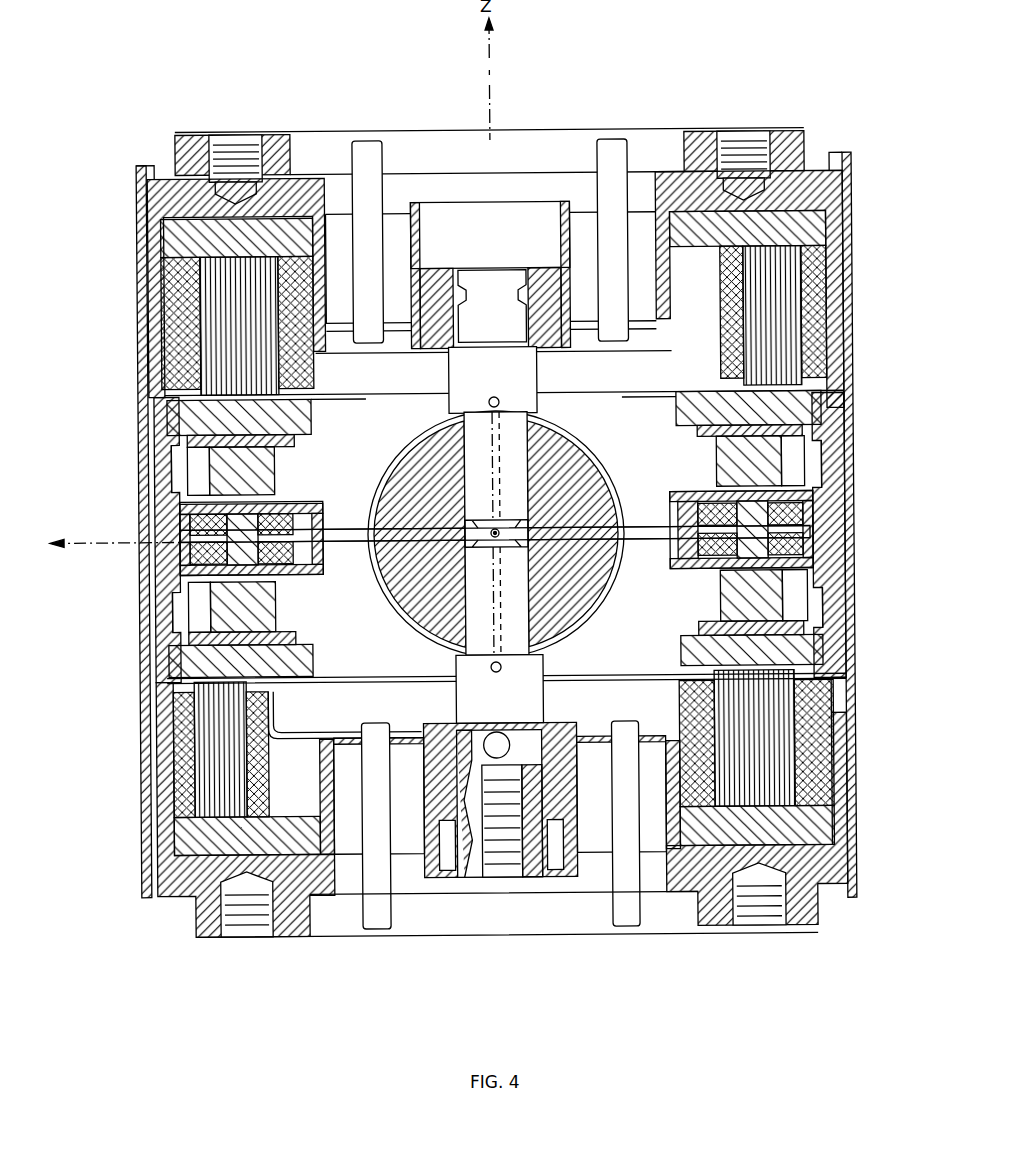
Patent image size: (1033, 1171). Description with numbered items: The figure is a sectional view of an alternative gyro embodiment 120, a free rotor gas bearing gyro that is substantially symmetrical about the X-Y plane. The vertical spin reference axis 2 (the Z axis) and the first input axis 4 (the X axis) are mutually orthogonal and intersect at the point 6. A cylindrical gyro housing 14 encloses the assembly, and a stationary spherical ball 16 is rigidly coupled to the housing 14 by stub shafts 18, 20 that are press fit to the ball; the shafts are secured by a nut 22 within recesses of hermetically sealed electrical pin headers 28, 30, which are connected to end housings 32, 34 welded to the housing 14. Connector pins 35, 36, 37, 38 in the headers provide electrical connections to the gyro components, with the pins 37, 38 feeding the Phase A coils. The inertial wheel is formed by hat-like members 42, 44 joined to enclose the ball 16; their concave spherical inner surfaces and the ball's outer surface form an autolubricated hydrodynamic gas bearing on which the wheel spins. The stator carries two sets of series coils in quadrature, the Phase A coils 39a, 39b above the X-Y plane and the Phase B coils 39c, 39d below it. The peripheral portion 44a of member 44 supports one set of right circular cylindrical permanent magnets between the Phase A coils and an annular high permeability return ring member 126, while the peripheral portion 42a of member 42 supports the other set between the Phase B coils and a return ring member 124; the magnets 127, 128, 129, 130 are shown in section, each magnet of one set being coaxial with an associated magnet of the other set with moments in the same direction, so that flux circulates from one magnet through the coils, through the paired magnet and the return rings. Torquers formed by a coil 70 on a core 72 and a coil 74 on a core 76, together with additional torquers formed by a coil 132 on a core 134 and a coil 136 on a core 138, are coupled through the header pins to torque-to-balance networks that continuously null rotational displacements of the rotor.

The alternative gyro embodiment 120 is at (337, 29).
The spin reference axis 2 is at (493, 56).
The first input axis 4 is at (102, 540).
The axis intersection point 6 is at (500, 531).
The gyro housing 14 is at (140, 275).
The spherical ball 16 is at (440, 595).
The stub shaft 18 is at (524, 377).
The stub shaft 20 is at (530, 699).
The nut 22 is at (462, 870).
The electrical pin header 28 is at (350, 279).
The electrical pin header 30 is at (354, 809).
The end housing 32 is at (315, 925).
The end housing 34 is at (323, 140).
The connector pin 35 is at (372, 918).
The connector pin 36 is at (622, 915).
The connector pin 37 is at (370, 150).
The connector pin 38 is at (614, 148).
The Phase A coil 39a is at (190, 507).
The Phase A coil 39b is at (790, 512).
The Phase B coil 39c is at (190, 551).
The Phase B coil 39d is at (800, 549).
The hat-like rotor member 42 is at (357, 624).
The peripheral portion of member 42 42a is at (185, 610).
The hat-like rotor member 44 is at (360, 465).
The peripheral portion of member 44 44a is at (185, 462).
The torquer coil 70 is at (180, 758).
The torquer core 72 is at (210, 783).
The torquer coil 74 is at (815, 727).
The torquer core 76 is at (770, 770).
The return ring member 124 is at (180, 650).
The return ring member 126 is at (180, 425).
The permanent magnet 127 is at (258, 477).
The permanent magnet 128 is at (766, 471).
The permanent magnet 129 is at (258, 613).
The permanent magnet 130 is at (768, 606).
The additional torquer coil 132 is at (178, 318).
The additional torquer core 134 is at (235, 370).
The additional torquer coil 136 is at (820, 292).
The additional torquer core 138 is at (785, 322).